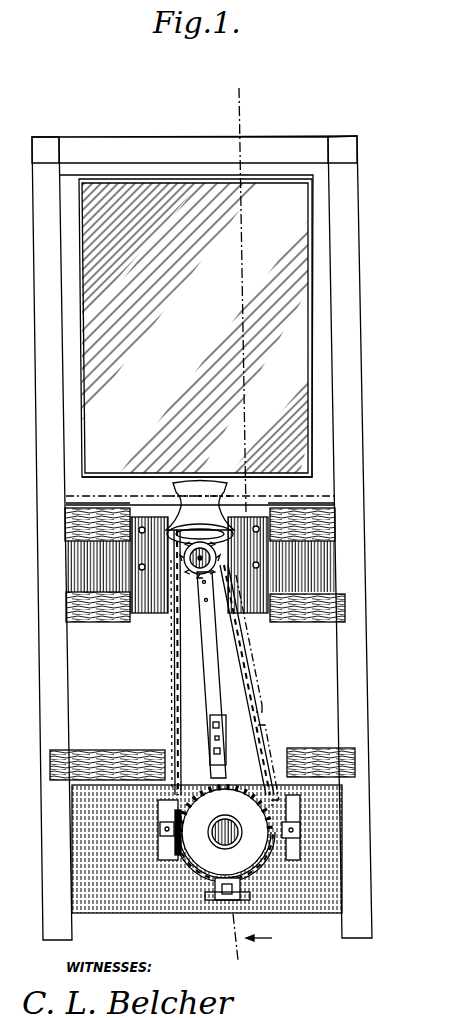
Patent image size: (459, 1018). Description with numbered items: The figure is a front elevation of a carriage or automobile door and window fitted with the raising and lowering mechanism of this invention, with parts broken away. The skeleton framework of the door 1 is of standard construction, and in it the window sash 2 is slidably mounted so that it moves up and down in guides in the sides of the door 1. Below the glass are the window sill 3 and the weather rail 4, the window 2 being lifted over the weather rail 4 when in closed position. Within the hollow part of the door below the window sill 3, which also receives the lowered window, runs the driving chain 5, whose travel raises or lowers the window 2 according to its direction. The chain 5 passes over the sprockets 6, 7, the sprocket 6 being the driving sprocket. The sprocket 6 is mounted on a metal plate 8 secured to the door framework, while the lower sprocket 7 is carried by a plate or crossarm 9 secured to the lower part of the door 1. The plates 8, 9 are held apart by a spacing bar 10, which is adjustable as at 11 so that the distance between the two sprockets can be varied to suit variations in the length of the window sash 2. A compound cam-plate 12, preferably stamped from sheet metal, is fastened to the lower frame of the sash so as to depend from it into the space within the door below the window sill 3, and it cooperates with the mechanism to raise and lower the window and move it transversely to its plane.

The skeleton framework of automobile door 1 is at (359, 643).
The window sash 2 is at (249, 528).
The window sill 3 is at (323, 500).
The weather rail 4 is at (300, 492).
The driving chain 5 is at (175, 685).
The driving sprocket 6 is at (182, 675).
The sprocket 7 is at (207, 808).
The metal plate 8 is at (257, 613).
The plate or crossarm 9 is at (293, 830).
The spacing bar 10 is at (212, 667).
The adjustment of spacing bar 11 is at (222, 735).
The compound cam-plate 12 is at (178, 528).